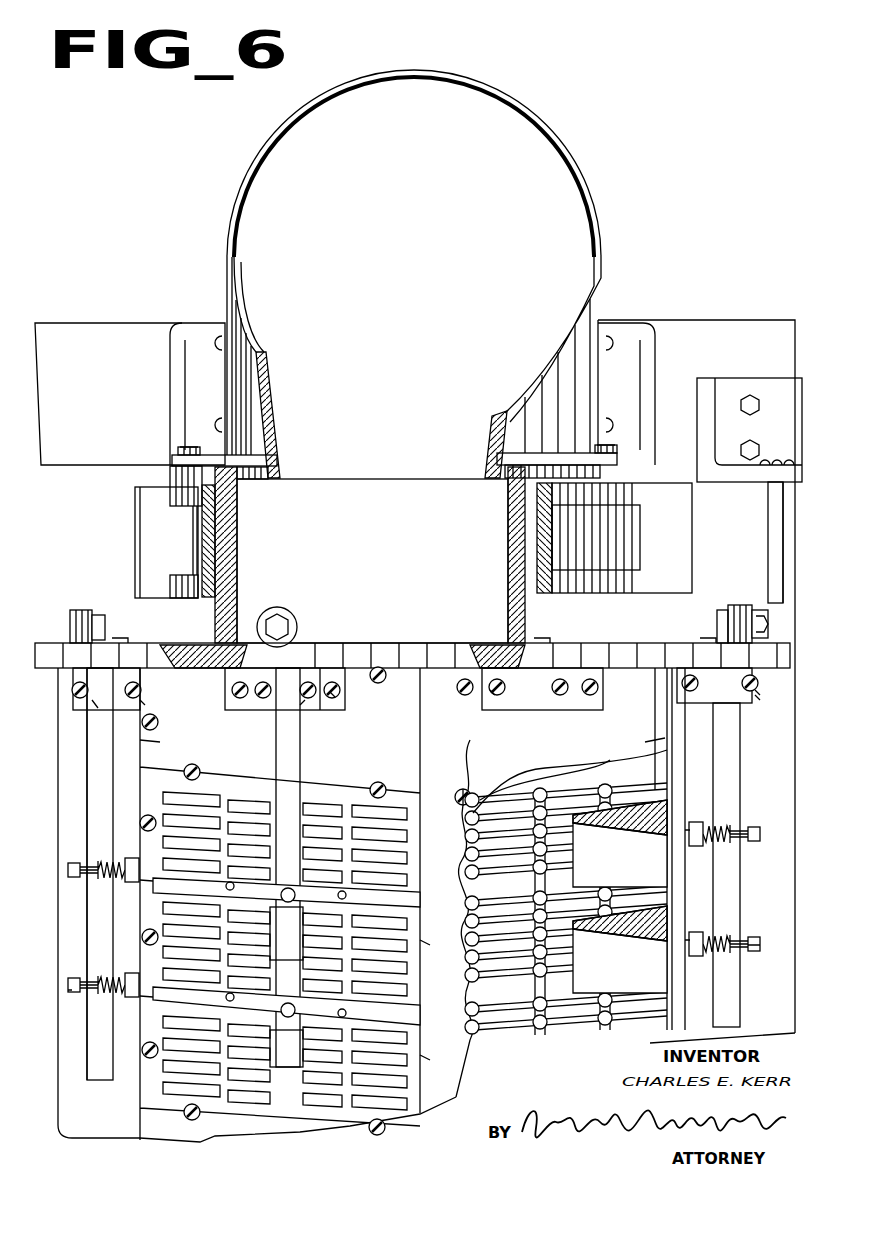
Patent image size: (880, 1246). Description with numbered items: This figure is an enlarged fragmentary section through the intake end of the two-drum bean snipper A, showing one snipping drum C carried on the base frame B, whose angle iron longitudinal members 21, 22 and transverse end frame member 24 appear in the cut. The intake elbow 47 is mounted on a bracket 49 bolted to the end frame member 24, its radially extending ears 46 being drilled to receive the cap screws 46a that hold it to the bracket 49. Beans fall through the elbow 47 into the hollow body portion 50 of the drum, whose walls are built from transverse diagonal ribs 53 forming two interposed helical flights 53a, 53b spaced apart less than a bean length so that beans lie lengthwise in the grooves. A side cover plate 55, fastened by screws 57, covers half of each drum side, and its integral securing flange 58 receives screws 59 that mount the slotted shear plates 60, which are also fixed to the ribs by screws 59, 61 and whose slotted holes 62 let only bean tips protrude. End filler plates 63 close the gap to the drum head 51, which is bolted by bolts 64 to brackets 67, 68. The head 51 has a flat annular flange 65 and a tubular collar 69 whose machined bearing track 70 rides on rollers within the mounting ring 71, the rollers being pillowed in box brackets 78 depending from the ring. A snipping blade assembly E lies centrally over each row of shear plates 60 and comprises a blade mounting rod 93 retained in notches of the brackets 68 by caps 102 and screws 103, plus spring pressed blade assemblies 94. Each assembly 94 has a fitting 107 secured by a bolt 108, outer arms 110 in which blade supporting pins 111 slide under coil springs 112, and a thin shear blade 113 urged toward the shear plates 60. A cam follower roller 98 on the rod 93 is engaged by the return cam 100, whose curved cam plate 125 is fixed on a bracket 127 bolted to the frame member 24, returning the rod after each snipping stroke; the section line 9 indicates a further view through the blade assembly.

The intake elbow 47 is at (598, 222).
The transverse end frame member 24 is at (130, 394).
The bracket 49 is at (658, 452).
The radially extending ear 46 is at (188, 452).
The cap screw 46a is at (658, 414).
The mounting ring 71 is at (198, 503).
The box bracket 78 is at (413, 540).
The tubular collar 69 is at (230, 565).
The bearing track 70 is at (218, 538).
The cam follower roller 98 is at (298, 622).
The bolt 64 is at (118, 643).
The annular flange 65 is at (655, 643).
The drum head 51 is at (55, 670).
The bracket 127 is at (776, 388).
The base frame B is at (752, 326).
The return cam plate 125 is at (766, 540).
The blade support rod return cam 100 is at (765, 520).
The longitudinal frame member 21 is at (257, 905).
The spring pressed blade assembly 94 is at (150, 883).
The screw 103 is at (82, 700).
The bracket 68 is at (94, 706).
The cap 102 is at (332, 694).
The bracket 67 is at (142, 702).
The hollow body portion 50 is at (158, 742).
The blade mounting rod 93 is at (100, 780).
The end filler plate 63 is at (280, 904).
The slotted hole 62 is at (390, 862).
The slotted shear plate 60 is at (410, 950).
The screw 59 is at (158, 720).
The screw 61 is at (192, 764).
The screw 57 is at (455, 790).
The pin mounting arm 110 is at (286, 951).
The fitting 107 is at (288, 888).
The bolt 108 is at (752, 858).
The coil spring 112 is at (75, 862).
The blade supporting pin 111 is at (72, 990).
The shear blade 113 is at (155, 884).
The snipping blade assembly E is at (70, 862).
The section line 9 is at (85, 985).
The two-drum bean snipper A is at (100, 1035).
The longitudinal frame member 22 is at (722, 855).
The transverse diagonal rib 53 is at (688, 888).
The flight rib 53a is at (620, 846).
The flight rib 53b is at (620, 952).
The snipping drum C is at (570, 770).
The side cover plate 55 is at (631, 725).
The securing flange 58 is at (665, 738).